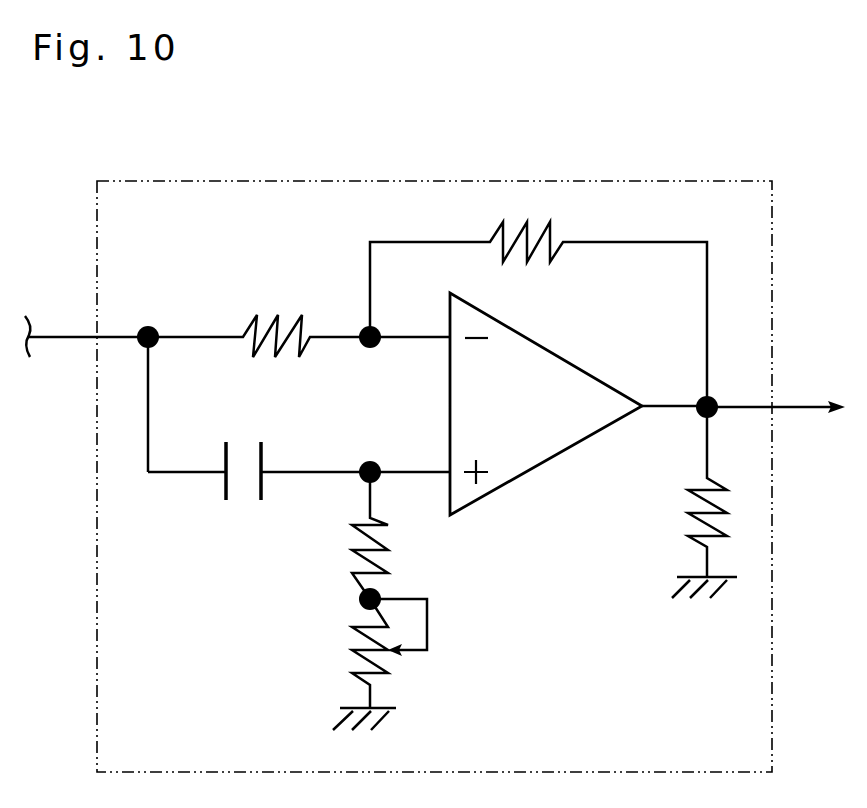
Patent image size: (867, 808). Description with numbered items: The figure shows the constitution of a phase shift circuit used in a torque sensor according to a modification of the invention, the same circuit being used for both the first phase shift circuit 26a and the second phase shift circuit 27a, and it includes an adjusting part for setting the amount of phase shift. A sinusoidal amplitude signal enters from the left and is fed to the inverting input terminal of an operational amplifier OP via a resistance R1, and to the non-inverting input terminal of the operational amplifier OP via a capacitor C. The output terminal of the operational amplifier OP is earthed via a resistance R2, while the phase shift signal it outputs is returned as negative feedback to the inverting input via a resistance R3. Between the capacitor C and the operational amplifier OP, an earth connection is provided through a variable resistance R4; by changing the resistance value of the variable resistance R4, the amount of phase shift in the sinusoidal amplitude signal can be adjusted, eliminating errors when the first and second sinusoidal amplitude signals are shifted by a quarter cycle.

The first phase shift circuit 26a is at (434, 426).
The second phase shift circuit 27a is at (447, 181).
The resistance R1 is at (266, 322).
The resistance R2 is at (690, 492).
The resistance R3 is at (527, 223).
The variable resistance R4 is at (358, 631).
The capacitor C is at (223, 483).
The operational amplifier OP is at (553, 352).